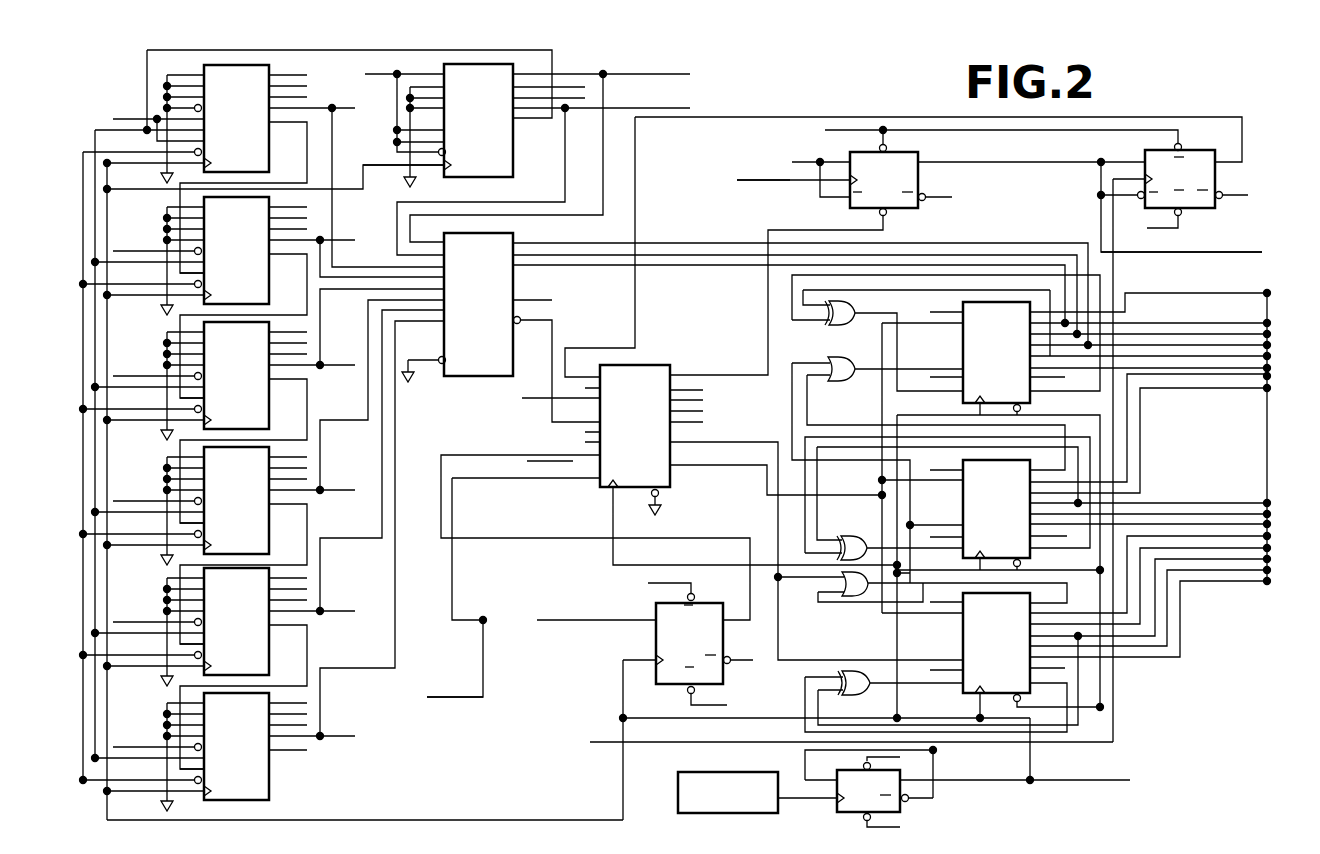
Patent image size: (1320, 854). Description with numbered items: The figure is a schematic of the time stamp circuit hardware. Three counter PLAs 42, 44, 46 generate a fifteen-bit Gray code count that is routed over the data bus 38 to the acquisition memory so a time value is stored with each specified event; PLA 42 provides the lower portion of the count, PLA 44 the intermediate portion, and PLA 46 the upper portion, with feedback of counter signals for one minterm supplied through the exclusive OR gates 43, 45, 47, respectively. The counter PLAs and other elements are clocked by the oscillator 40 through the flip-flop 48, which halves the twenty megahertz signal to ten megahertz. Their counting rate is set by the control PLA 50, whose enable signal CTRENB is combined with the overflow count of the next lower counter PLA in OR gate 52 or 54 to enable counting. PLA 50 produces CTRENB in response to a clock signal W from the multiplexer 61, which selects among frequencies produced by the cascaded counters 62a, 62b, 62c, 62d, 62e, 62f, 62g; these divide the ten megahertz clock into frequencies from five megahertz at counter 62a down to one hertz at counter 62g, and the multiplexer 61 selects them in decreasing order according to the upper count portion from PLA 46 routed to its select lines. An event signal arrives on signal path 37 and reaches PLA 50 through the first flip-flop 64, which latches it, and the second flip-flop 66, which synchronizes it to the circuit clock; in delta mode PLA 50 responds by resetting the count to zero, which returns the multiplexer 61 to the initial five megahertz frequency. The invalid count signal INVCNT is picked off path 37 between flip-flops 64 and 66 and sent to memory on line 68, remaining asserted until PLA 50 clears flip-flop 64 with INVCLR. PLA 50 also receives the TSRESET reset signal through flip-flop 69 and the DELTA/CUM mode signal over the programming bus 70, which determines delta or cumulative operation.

The signal path 37 is at (772, 180).
The data bus 38 is at (1270, 293).
The oscillator 40 is at (728, 772).
The counter PLA 42 is at (963, 640).
The exclusive OR gate 43 is at (845, 692).
The counter PLA 44 is at (963, 498).
The exclusive OR gate 45 is at (857, 538).
The counter PLA 46 is at (963, 352).
The exclusive OR gate 47 is at (850, 318).
The flip-flop 48 is at (900, 772).
The control PLA 50 is at (662, 365).
The OR gate 52 is at (855, 372).
The OR gate 54 is at (852, 596).
The multiplexer 61 is at (490, 233).
The counter 62a is at (513, 120).
The counter 62b is at (270, 68).
The counter 62c is at (270, 198).
The counter 62d is at (269, 400).
The counter 62e is at (269, 450).
The counter 62f is at (269, 566).
The counter 62g is at (269, 693).
The first flip-flop 64 is at (905, 152).
The second flip-flop 66 is at (1160, 150).
The line 68 is at (1262, 252).
The flip-flop 69 is at (722, 605).
The programming bus 70 is at (483, 672).